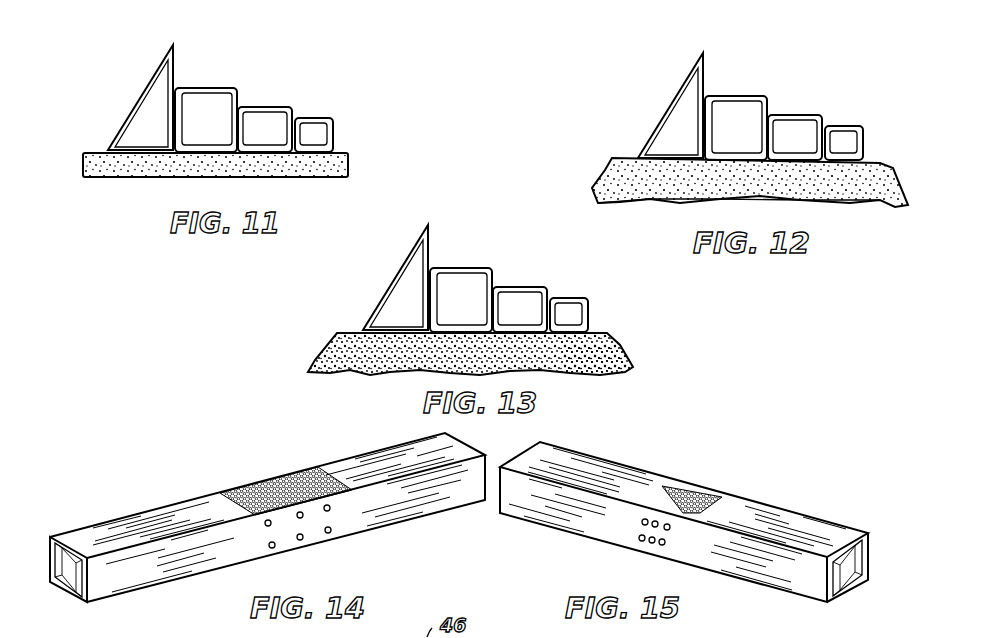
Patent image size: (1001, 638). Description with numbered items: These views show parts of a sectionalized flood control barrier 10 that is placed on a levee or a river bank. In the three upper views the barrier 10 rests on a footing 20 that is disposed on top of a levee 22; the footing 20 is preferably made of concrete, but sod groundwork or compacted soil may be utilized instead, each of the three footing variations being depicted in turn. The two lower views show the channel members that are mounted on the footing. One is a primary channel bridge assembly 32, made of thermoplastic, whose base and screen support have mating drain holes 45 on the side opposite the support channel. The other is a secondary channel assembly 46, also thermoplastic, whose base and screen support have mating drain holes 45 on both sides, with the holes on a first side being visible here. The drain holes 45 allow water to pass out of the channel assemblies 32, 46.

In FIG. 11, the sectionalized flood control barrier 10 is at (129, 78).
In FIG. 12, the sectionalized flood control barrier 10 is at (641, 109).
In FIG. 13, the sectionalized flood control barrier 10 is at (363, 299).
In FIG. 11, the footing 20 is at (148, 178).
In FIG. 12, the footing 20 is at (853, 190).
In FIG. 13, the footing 20 is at (367, 374).
In FIG. 12, the levee 22 is at (684, 203).
In FIG. 13, the levee 22 is at (590, 377).
In FIG. 14, the primary channel bridge assembly 32 is at (207, 495).
In FIG. 14, the mating drain holes 45 is at (330, 538).
In FIG. 15, the mating drain holes 45 is at (641, 538).
In FIG. 15, the secondary channel assembly 46 is at (740, 497).